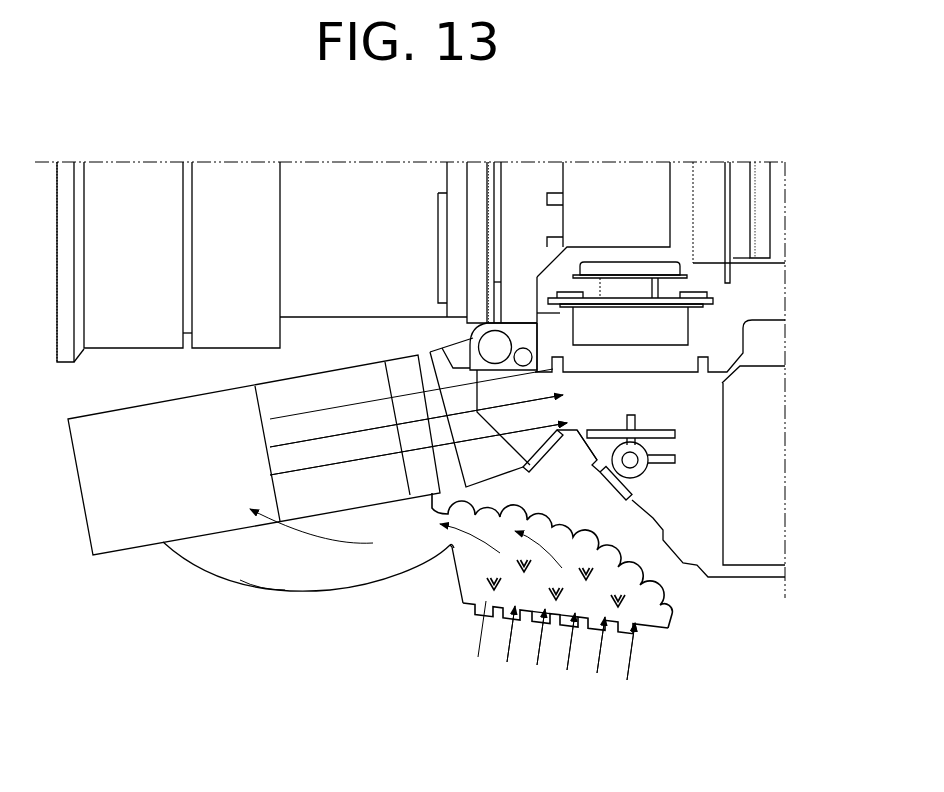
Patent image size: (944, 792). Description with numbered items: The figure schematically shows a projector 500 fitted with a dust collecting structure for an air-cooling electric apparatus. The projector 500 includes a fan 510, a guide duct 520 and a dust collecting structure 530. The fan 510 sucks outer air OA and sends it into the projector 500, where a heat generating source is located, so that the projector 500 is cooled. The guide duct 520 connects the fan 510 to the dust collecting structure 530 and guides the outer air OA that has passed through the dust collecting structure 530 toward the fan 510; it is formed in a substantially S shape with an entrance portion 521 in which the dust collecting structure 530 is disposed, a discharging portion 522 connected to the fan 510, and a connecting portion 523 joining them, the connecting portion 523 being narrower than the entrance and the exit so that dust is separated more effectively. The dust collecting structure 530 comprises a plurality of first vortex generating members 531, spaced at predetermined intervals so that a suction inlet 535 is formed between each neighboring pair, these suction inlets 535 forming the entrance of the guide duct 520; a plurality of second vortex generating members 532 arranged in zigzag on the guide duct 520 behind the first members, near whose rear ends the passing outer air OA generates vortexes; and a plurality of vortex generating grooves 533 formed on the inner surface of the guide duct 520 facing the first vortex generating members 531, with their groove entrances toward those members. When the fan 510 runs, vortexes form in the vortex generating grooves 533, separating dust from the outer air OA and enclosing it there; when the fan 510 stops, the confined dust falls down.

The projector 500 is at (328, 178).
The fan 510 is at (98, 532).
The guide duct 520 is at (212, 578).
The discharging portion 522 is at (247, 587).
The connecting portion 523 is at (450, 553).
The entrance portion 521 is at (458, 580).
The dust collecting structure 530 is at (660, 618).
The first vortex generating member 531 is at (557, 631).
The second vortex generating member 532 is at (622, 604).
The vortex generating groove 533 is at (600, 541).
The suction inlet 535 is at (540, 628).
The outer air OA is at (633, 640).